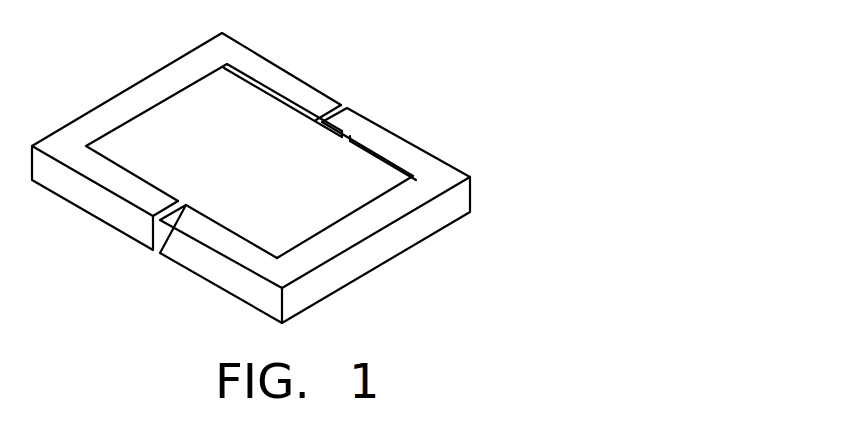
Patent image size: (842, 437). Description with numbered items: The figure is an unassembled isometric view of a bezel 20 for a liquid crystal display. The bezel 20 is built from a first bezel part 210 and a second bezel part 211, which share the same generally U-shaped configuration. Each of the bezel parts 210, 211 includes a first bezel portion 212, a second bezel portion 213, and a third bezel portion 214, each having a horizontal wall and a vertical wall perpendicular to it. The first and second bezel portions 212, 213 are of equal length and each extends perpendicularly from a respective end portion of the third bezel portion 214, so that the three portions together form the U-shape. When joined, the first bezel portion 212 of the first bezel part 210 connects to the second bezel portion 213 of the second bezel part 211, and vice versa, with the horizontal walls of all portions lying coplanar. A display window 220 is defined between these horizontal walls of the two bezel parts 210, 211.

The bezel 20 is at (107, 57).
The first bezel part 210 is at (392, 123).
The second bezel part 211 is at (259, 45).
The first bezel portion 212 is at (220, 270).
The second bezel portion 213 is at (403, 155).
The third bezel portion 214 is at (405, 232).
The display window 220 is at (268, 113).